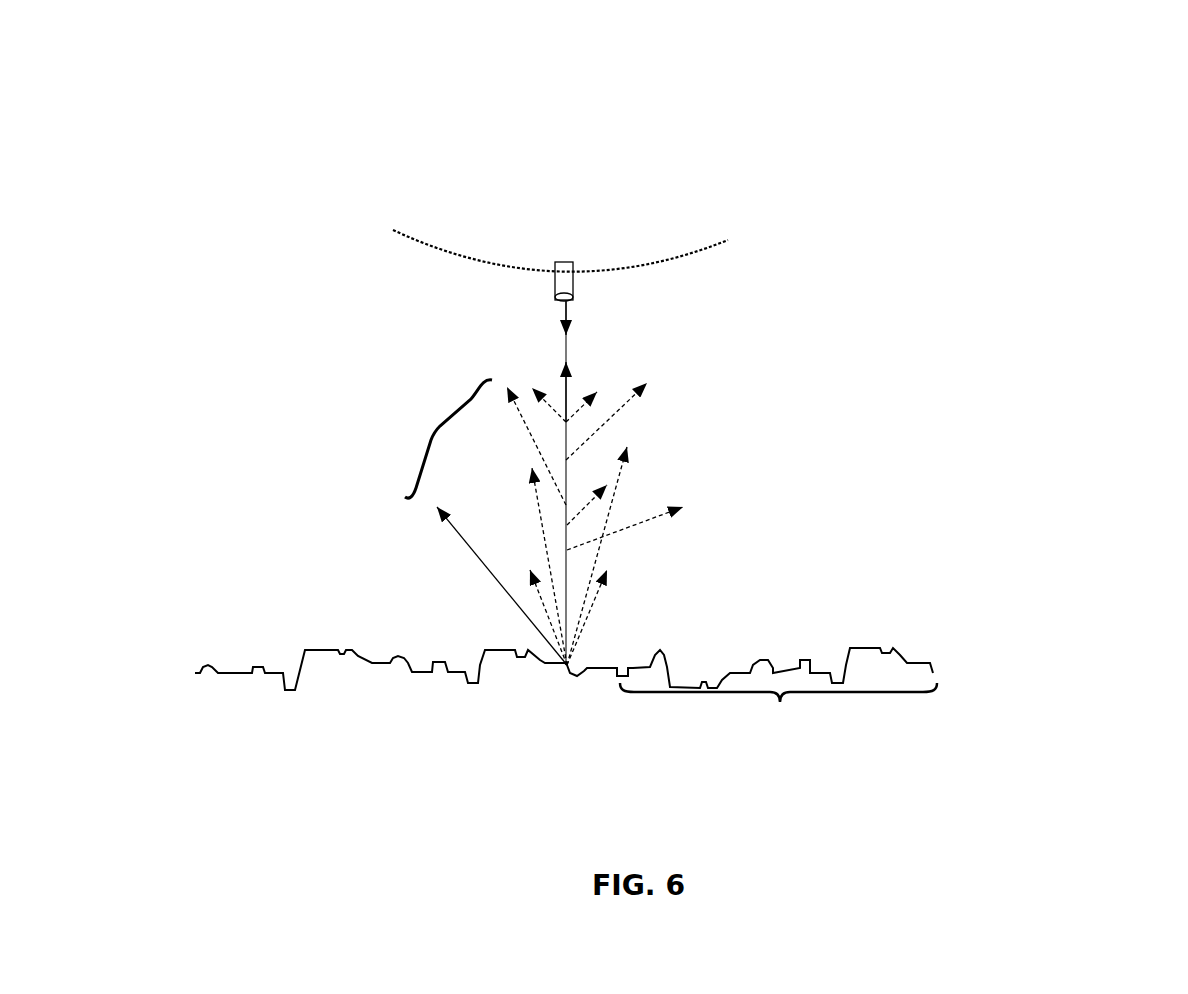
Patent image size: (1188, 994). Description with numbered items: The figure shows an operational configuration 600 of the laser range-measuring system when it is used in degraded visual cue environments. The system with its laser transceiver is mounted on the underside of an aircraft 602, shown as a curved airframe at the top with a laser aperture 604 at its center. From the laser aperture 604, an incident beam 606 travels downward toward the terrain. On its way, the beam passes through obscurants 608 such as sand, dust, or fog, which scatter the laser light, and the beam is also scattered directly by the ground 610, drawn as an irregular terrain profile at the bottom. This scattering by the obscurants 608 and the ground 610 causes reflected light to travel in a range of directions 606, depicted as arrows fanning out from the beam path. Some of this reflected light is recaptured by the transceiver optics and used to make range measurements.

The operational configuration 600 is at (1130, 128).
The aircraft 602 is at (693, 257).
The laser aperture 604 is at (555, 285).
The incident beam 606 is at (568, 343).
The obscurants 608 is at (925, 585).
The ground 610 is at (792, 700).